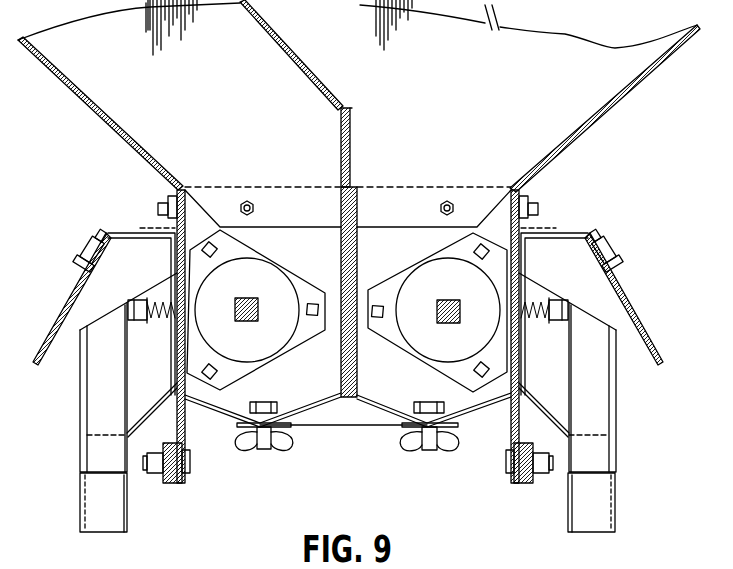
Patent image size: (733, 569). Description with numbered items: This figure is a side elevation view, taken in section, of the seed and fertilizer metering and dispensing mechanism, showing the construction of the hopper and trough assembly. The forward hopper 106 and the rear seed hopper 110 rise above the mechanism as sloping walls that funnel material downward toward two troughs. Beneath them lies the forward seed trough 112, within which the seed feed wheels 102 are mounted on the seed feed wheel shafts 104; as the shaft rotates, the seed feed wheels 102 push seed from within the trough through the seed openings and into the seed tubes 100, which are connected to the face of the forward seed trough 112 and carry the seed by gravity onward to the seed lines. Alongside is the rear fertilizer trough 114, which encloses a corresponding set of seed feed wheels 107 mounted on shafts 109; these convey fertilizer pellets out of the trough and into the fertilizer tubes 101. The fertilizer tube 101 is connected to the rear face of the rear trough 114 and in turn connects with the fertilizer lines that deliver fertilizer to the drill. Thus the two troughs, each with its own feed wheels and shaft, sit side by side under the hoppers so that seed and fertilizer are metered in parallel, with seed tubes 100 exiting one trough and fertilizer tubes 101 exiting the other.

The seed tube 100 is at (618, 402).
The fertilizer tube 101 is at (80, 395).
The seed feed wheel 102 is at (413, 283).
The seed feed wheel shaft 104 is at (437, 316).
The forward hopper 106 is at (630, 86).
The seed feed wheel (rear) 107 is at (272, 280).
The shaft (rear feed wheel shaft) 109 is at (258, 322).
The rear seed hopper 110 is at (77, 90).
The forward seed trough 112 is at (395, 419).
The rear fertilizer trough 114 is at (311, 415).